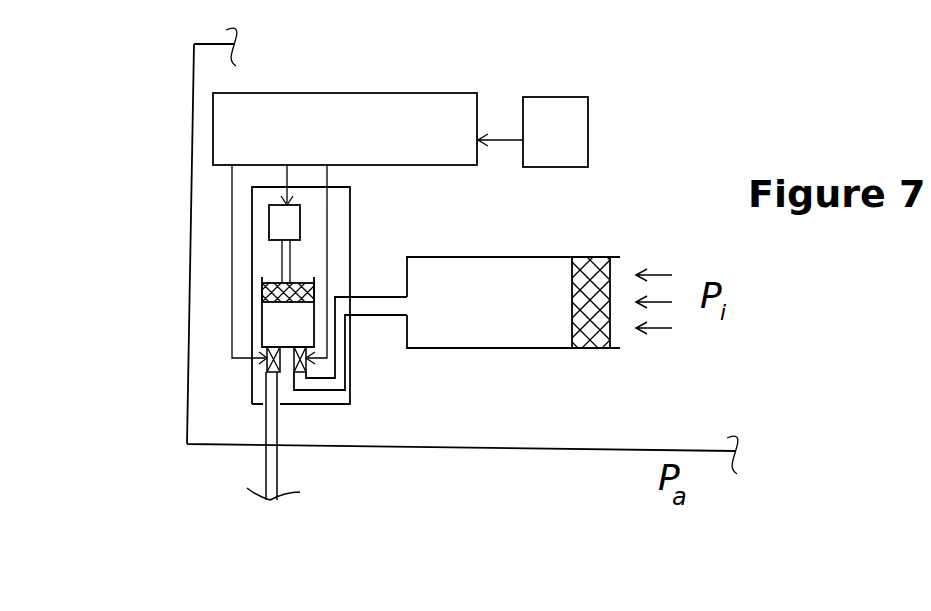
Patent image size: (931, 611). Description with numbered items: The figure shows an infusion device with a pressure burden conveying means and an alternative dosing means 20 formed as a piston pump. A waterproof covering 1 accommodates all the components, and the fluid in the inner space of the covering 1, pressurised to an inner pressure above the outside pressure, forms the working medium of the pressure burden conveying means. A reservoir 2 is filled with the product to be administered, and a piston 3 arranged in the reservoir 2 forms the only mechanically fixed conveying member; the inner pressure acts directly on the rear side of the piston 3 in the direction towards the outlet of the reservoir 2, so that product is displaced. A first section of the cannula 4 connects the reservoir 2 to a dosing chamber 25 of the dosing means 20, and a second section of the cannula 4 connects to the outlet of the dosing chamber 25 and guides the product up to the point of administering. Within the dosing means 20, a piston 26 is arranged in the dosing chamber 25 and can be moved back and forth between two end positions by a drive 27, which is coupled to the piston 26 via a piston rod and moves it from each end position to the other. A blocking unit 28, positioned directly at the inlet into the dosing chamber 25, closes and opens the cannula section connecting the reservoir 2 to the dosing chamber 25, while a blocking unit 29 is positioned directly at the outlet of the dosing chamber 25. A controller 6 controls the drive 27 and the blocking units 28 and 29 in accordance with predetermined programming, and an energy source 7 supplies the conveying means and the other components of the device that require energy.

The covering 1 is at (193, 85).
The reservoir 2 is at (470, 337).
The piston 3 is at (582, 350).
The cannula 4 is at (377, 305).
The controller 6 is at (345, 228).
The energy source 7 is at (533, 132).
The dosing means 20 is at (250, 193).
The dosing chamber 25 is at (272, 313).
The piston 26 is at (262, 290).
The drive 27 is at (270, 220).
The blocking unit 28 is at (297, 403).
The blocking unit 29 is at (267, 403).